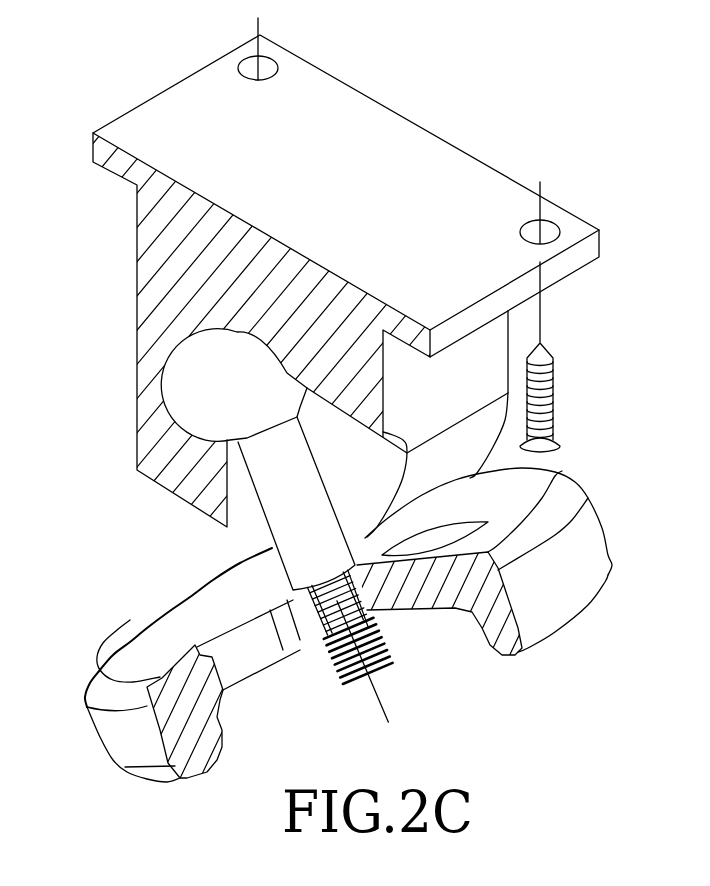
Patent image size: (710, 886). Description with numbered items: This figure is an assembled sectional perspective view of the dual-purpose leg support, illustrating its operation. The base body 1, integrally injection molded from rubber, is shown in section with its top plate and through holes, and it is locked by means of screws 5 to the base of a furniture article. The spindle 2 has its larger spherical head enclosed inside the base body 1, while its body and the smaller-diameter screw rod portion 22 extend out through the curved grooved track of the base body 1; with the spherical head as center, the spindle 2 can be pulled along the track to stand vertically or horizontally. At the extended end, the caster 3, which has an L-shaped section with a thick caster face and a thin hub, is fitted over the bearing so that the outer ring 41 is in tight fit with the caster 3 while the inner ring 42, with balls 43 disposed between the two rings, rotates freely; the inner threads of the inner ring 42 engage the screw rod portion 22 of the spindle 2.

The base body 1 is at (468, 128).
The spindle 2 is at (280, 538).
The caster 3 is at (595, 567).
The screws 5 is at (556, 392).
The screw rod portion 22 is at (370, 650).
The outer ring 41 is at (317, 633).
The inner ring 42 is at (338, 638).
The balls 43 is at (387, 616).